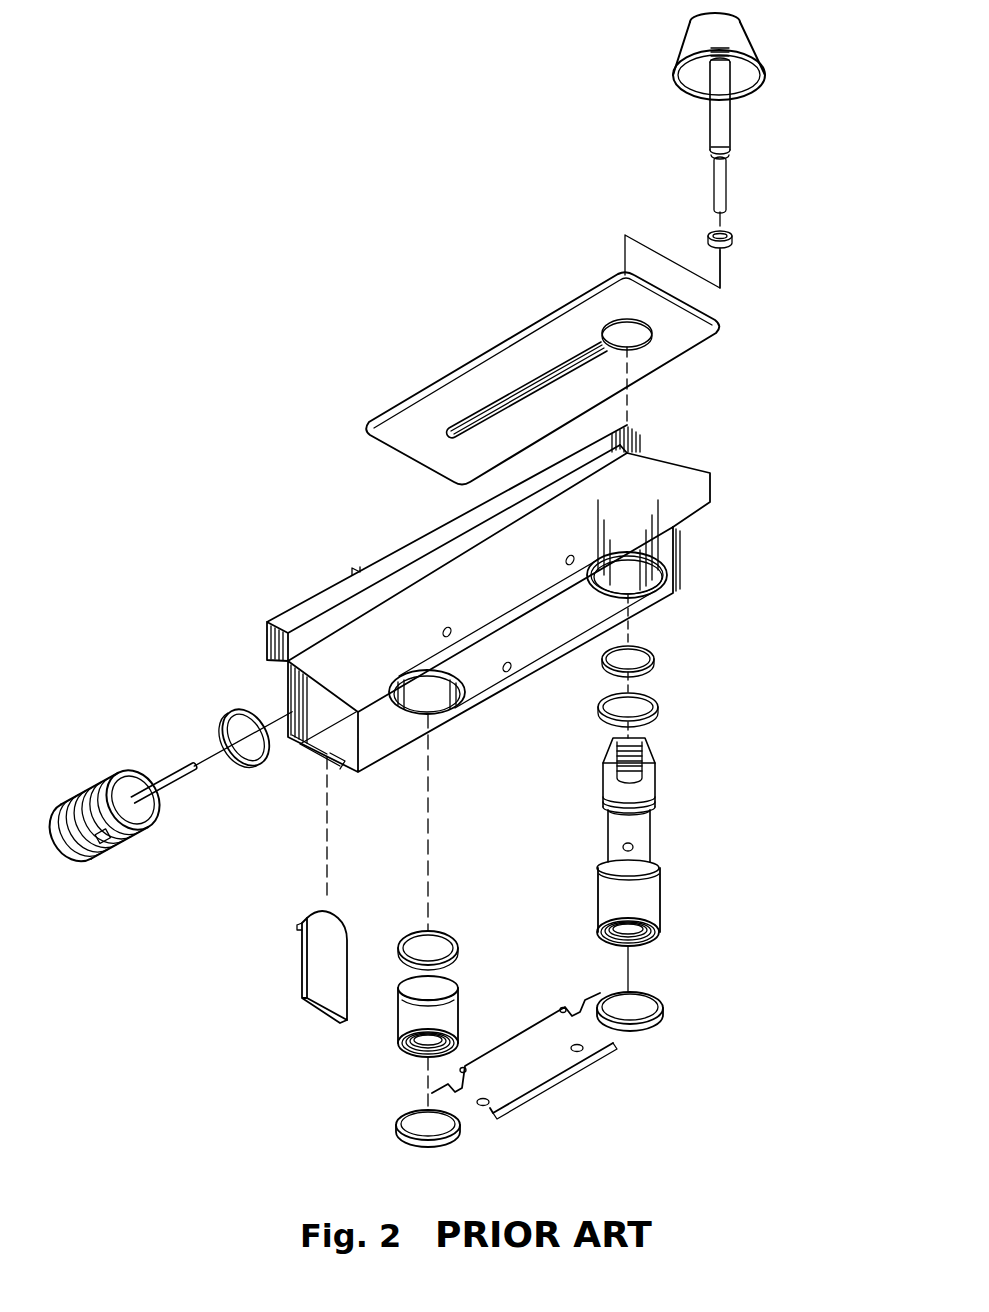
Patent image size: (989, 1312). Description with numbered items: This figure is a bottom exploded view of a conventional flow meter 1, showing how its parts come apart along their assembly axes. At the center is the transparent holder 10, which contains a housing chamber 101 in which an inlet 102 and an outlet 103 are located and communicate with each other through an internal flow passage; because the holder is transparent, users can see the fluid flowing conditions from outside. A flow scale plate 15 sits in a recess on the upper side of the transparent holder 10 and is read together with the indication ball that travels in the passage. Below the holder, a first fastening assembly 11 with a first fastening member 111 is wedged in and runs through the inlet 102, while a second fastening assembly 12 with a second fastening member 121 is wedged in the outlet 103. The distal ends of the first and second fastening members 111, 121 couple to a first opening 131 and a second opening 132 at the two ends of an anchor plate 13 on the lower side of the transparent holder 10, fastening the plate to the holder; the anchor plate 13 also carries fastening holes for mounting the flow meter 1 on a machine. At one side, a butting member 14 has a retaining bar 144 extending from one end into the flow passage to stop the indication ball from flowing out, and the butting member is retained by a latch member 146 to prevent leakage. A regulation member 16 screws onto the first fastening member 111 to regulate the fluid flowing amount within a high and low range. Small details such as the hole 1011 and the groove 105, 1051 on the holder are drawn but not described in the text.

The flow meter 1 is at (433, 307).
The transparent holder 10 is at (327, 608).
The housing chamber 101 is at (540, 637).
The screw hole 1011 is at (445, 627).
The inlet 102 is at (660, 590).
The outlet 103 is at (450, 720).
The lateral bore 105 is at (293, 737).
The groove 1051 is at (338, 760).
The first fastening assembly 11 is at (748, 642).
The first fastening member 111 is at (590, 858).
The second fastening assembly 12 is at (468, 942).
The second fastening member 121 is at (407, 1023).
The anchor plate 13 is at (538, 1078).
The first opening 131 is at (642, 1012).
The second opening 132 is at (428, 1130).
The butting member 14 is at (213, 695).
The retaining bar 144 is at (163, 783).
The latch member 146 is at (313, 963).
The flow scale plate 15 is at (537, 342).
The regulation member 16 is at (778, 77).